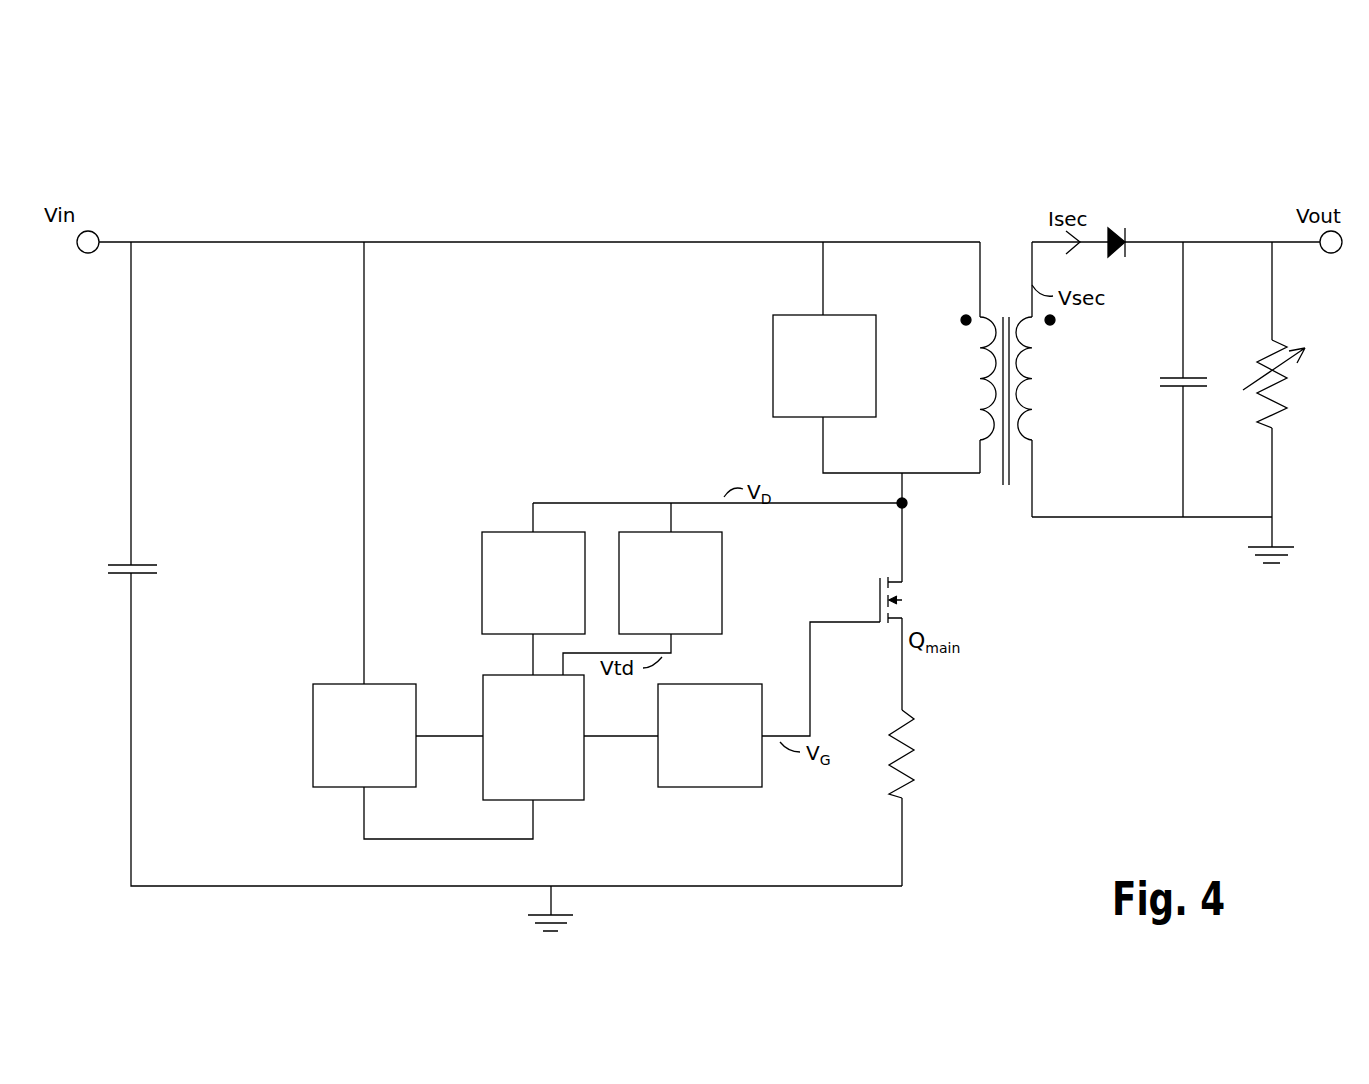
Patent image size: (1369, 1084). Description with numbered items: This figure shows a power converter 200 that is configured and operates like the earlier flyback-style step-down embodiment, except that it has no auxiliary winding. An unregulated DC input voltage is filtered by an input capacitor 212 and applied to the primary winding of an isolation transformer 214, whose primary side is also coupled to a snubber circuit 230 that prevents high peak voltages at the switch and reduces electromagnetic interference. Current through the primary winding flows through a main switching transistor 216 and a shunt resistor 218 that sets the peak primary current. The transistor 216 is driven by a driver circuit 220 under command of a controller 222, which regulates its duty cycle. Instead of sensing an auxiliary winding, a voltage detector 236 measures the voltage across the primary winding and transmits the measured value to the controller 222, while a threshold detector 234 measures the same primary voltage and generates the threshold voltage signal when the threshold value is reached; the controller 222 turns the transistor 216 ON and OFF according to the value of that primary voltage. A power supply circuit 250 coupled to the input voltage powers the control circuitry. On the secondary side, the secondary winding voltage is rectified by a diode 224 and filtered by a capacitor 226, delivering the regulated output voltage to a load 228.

The power converter 200 is at (1113, 133).
The input capacitor 212 is at (110, 562).
The transformer TX1 214 is at (1000, 277).
The transistor 216 is at (905, 608).
The sense resistor R3 218 is at (915, 735).
The driver circuit 220 is at (762, 780).
The controller 222 is at (586, 800).
The output diode 224 is at (1130, 222).
The output capacitor 226 is at (1197, 372).
The load resistor Rload 228 is at (1286, 375).
The snubber circuit 230 is at (773, 404).
The threshold detector 234 is at (722, 628).
The voltage detector 236 is at (477, 619).
The power supply circuit 250 is at (310, 772).